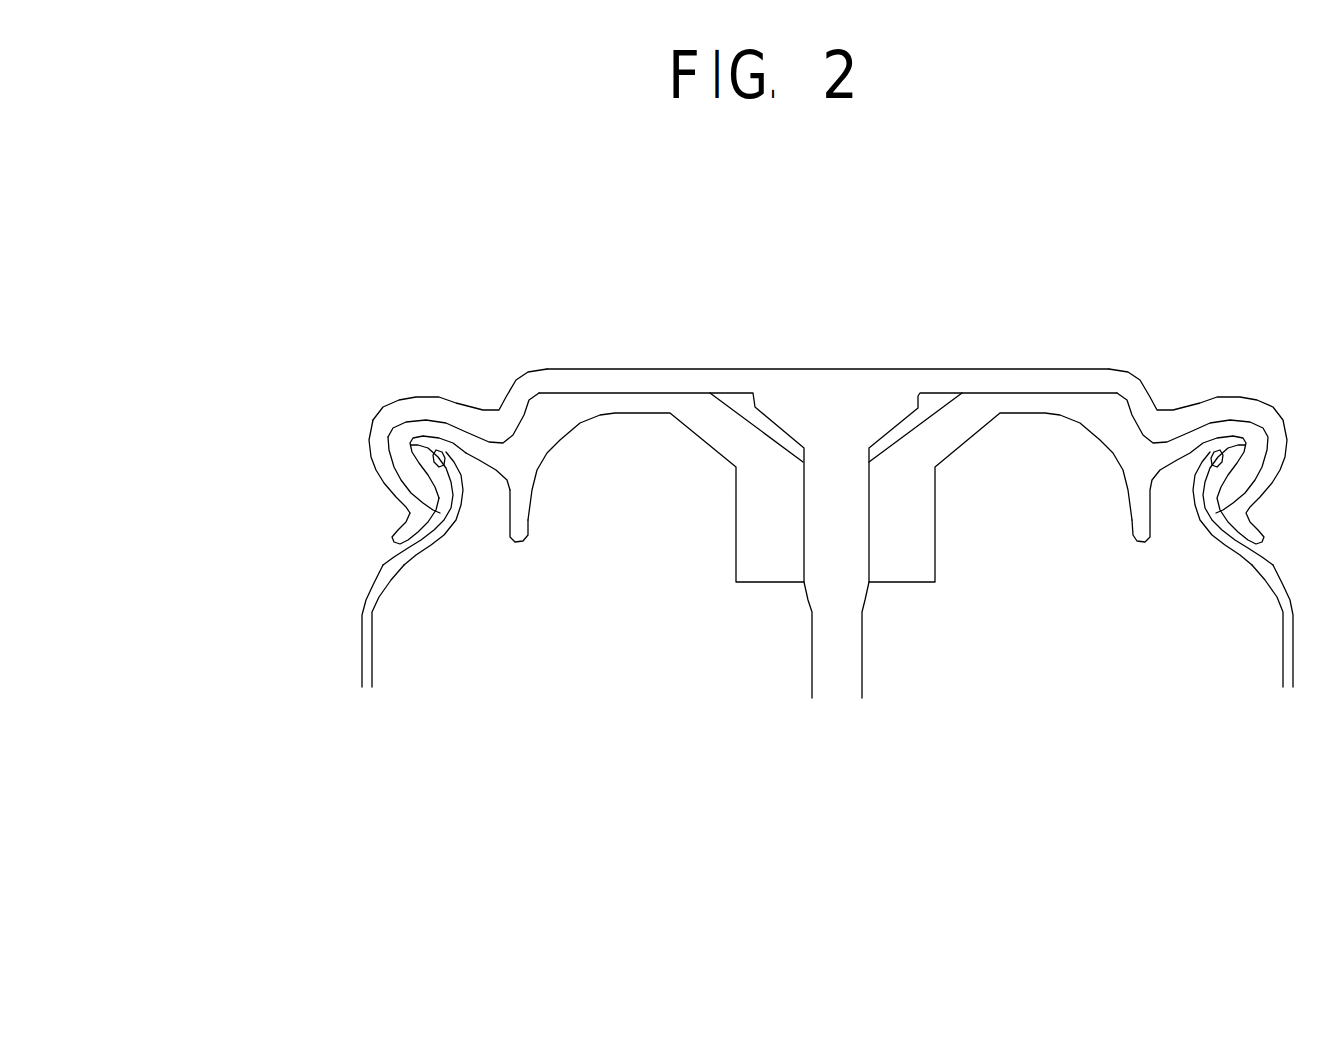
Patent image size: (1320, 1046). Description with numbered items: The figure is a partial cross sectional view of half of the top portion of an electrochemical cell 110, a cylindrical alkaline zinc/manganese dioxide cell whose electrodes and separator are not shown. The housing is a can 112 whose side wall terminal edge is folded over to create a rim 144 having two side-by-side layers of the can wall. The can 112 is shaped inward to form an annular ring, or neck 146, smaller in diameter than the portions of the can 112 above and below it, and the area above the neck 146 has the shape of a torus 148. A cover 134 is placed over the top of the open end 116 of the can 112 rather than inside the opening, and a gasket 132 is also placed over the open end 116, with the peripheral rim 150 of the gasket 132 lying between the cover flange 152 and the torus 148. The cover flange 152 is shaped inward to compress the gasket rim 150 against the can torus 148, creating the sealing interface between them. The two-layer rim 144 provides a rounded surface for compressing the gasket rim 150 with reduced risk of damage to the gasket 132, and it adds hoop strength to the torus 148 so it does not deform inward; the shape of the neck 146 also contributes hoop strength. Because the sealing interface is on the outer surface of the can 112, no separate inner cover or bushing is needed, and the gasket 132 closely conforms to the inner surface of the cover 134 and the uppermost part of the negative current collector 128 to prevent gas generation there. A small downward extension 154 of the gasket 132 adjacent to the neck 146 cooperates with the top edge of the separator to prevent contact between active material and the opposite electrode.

The cell 110 is at (318, 332).
The can 112 is at (365, 630).
The open end 116 is at (500, 330).
The negative current collector 128 is at (833, 642).
The gasket 132 is at (481, 458).
The cover 134 is at (628, 385).
The rim 144 is at (428, 478).
The neck 146 is at (460, 492).
The torus 148 is at (370, 440).
The peripheral rim 150 is at (412, 493).
The cover flange 152 is at (415, 508).
The downward extension 154 is at (520, 495).